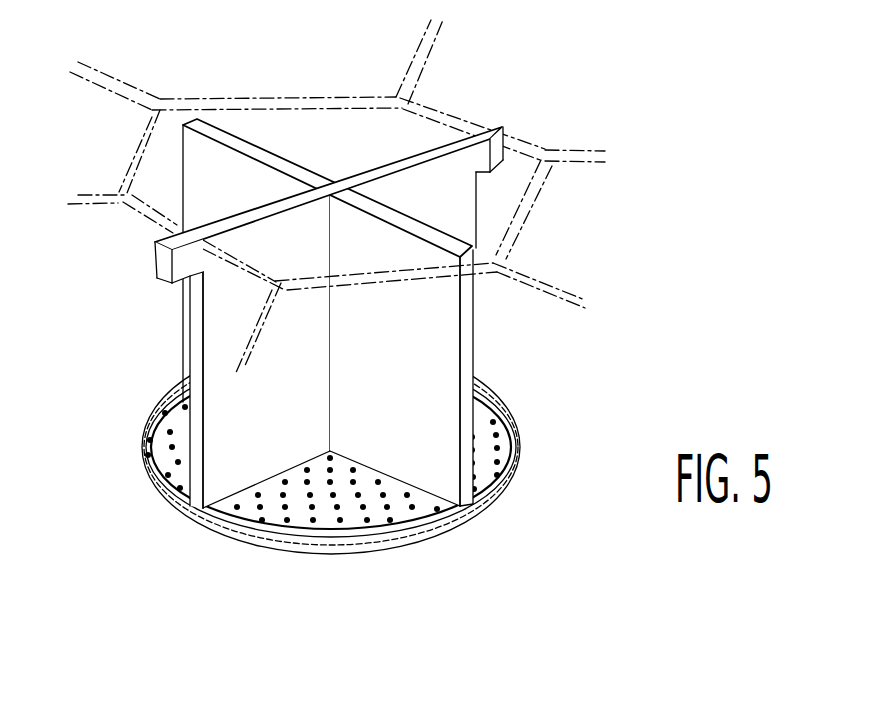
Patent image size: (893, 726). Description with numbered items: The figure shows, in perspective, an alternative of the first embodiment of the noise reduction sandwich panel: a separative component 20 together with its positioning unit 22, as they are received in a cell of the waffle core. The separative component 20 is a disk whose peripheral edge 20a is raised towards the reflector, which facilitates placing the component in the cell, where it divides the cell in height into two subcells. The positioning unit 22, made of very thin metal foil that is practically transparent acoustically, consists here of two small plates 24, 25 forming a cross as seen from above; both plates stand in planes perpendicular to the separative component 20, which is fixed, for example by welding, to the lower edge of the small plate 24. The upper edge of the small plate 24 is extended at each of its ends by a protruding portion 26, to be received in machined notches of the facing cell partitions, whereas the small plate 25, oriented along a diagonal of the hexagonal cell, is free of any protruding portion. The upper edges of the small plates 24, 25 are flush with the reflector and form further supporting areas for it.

The separative component 20 is at (236, 548).
The peripheral edge 20a is at (500, 398).
The positioning unit 22 is at (268, 138).
The small plate 24 is at (220, 335).
The small plate 25 is at (437, 330).
The protruding portion 26 is at (487, 127).